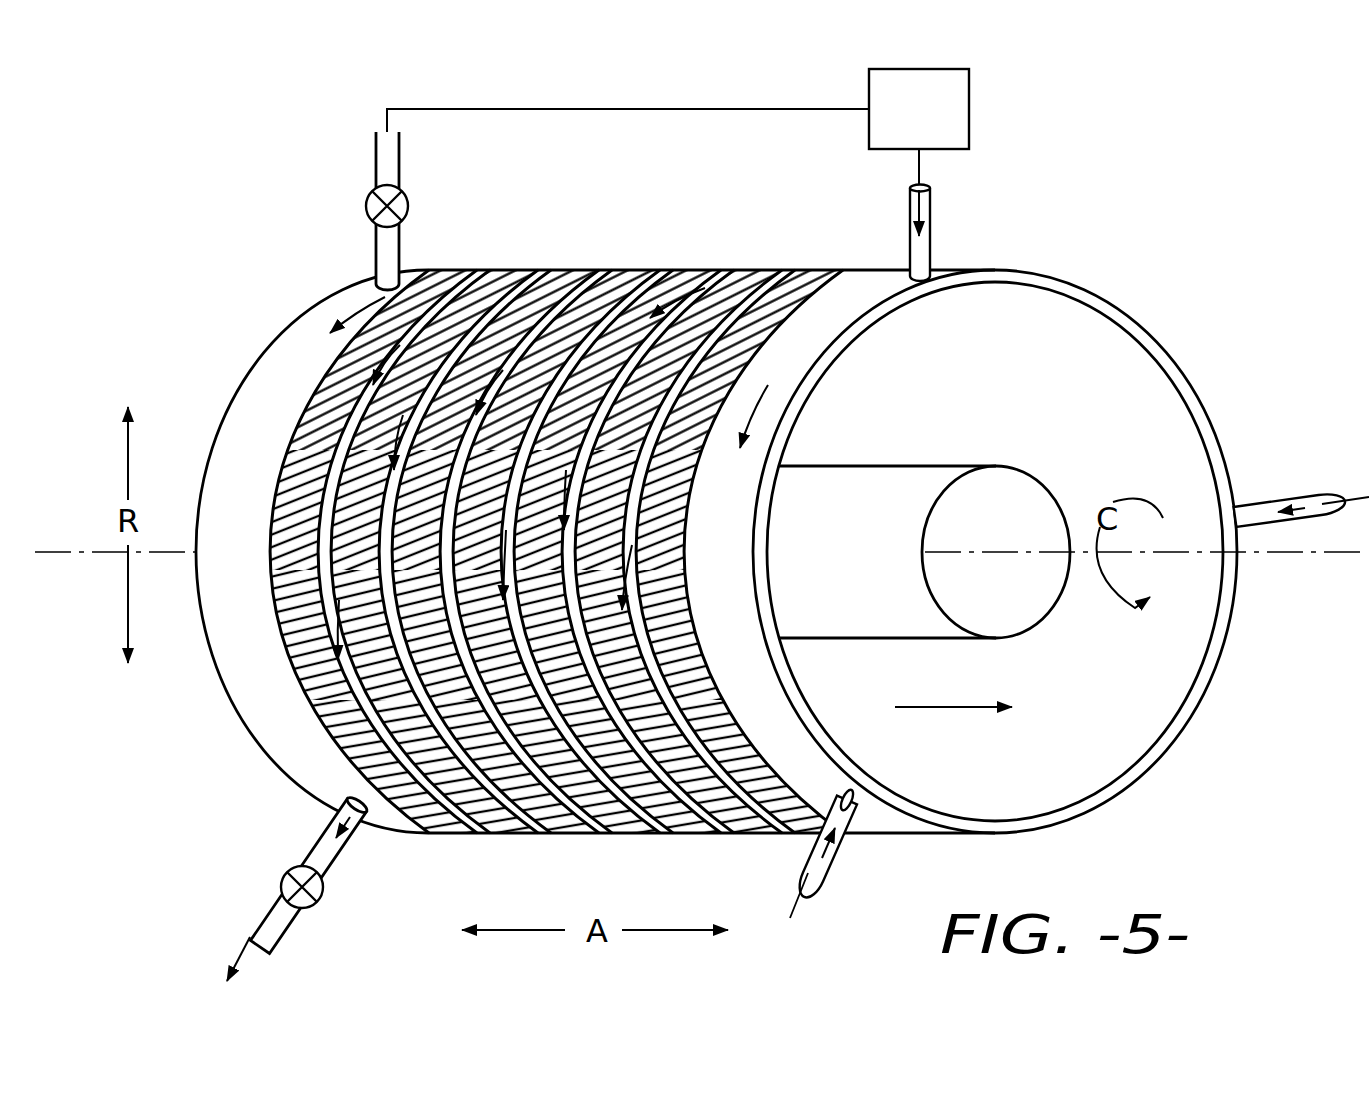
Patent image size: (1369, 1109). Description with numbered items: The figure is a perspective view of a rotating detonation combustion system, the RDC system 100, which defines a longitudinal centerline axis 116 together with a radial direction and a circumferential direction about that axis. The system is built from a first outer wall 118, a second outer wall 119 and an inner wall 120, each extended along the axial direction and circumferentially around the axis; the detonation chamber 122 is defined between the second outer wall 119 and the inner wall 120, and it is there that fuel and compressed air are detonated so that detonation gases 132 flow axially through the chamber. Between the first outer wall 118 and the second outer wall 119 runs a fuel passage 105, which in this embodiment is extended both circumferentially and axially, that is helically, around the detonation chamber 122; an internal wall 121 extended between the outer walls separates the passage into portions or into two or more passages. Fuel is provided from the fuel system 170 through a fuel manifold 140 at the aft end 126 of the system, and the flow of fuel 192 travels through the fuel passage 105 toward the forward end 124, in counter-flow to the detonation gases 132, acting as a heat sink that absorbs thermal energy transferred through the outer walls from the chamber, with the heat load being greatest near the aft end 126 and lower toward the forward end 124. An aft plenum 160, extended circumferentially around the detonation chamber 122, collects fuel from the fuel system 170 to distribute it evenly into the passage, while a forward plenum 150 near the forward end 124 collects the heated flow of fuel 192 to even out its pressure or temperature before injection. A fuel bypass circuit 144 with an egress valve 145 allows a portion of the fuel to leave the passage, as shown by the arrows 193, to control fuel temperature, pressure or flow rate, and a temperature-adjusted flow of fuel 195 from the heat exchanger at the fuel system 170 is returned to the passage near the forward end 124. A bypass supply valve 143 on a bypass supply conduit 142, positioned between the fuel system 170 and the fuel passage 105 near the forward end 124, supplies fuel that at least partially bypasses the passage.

The RDC system 100 is at (1158, 222).
The fuel passage 105 is at (512, 300).
The longitudinal centerline axis 116 is at (1280, 555).
The first outer wall 118 is at (843, 326).
The second outer wall 119 is at (897, 307).
The inner wall 120 is at (853, 462).
The internal wall 121 is at (512, 792).
The detonation chamber 122 is at (1045, 400).
The forward end 124 is at (245, 372).
The aft end 126 is at (1132, 382).
The detonation gases 132 is at (950, 707).
The fuel manifold 140 is at (932, 210).
The bypass supply conduit 142 is at (374, 256).
The bypass supply valve 143 is at (365, 206).
The fuel bypass circuit 144 is at (268, 907).
The egress valve 145 is at (290, 868).
The forward plenum 150 is at (258, 540).
The aft plenum 160 is at (736, 553).
The fuel system 170 is at (943, 124).
The flow of fuel 192 is at (920, 167).
The egressing fuel flow 193 is at (248, 955).
The temperature-adjusted flow of fuel 195 is at (497, 110).